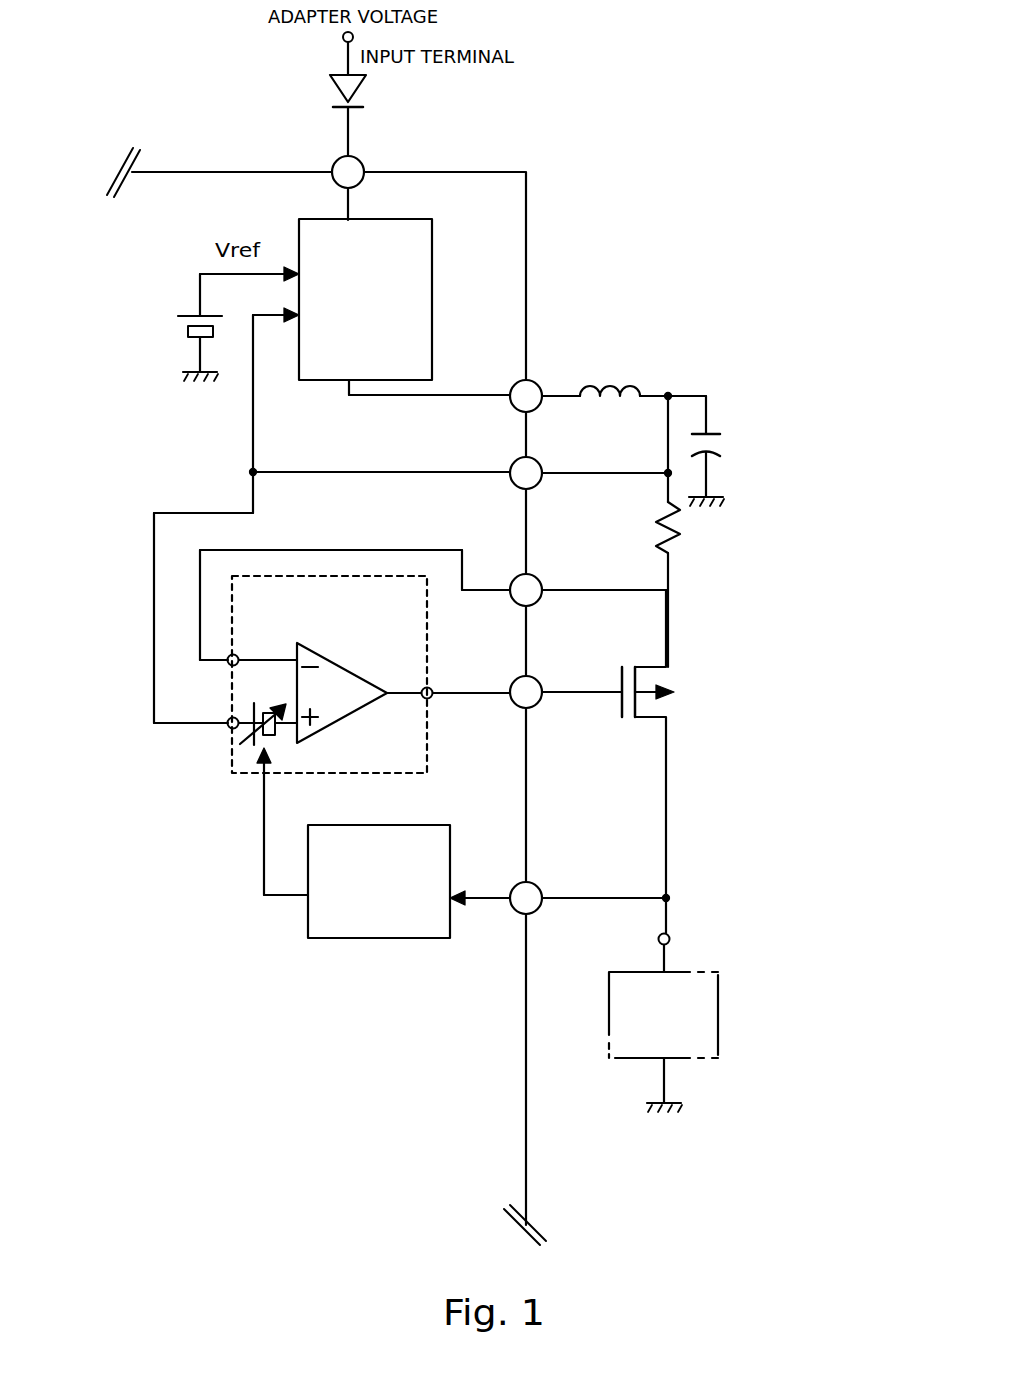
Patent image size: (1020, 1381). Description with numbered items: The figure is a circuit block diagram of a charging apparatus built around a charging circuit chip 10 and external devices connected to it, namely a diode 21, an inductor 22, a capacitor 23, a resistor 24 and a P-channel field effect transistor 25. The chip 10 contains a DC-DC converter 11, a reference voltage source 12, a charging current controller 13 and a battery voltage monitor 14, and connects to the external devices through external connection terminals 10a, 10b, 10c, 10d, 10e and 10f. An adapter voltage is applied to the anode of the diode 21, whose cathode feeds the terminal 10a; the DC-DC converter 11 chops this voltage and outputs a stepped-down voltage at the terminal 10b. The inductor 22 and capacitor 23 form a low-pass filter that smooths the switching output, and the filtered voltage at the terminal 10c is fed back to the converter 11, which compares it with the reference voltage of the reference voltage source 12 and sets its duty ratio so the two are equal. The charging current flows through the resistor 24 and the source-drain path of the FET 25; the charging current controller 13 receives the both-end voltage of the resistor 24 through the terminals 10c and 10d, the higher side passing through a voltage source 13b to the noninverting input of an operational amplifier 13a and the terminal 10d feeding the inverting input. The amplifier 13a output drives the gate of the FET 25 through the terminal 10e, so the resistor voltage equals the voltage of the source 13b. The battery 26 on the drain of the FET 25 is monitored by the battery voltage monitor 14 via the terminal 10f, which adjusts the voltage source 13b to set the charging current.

The charging circuit chip 10 is at (528, 199).
The external connection terminal 10a is at (361, 161).
The external connection terminal 10b is at (539, 384).
The external connection terminal 10c is at (543, 466).
The external connection terminal 10d is at (543, 582).
The external connection terminal 10e is at (543, 683).
The external connection terminal 10f is at (543, 888).
The DC-DC converter 11 is at (432, 253).
The reference voltage source 12 is at (178, 330).
The charging current controller 13 is at (358, 710).
The operational amplifier 13a is at (330, 727).
The voltage source 13b is at (255, 748).
The battery voltage monitor 14 is at (420, 940).
The diode 21 is at (364, 94).
The inductor 22 is at (630, 383).
The capacitor 23 is at (720, 446).
The resistor 24 is at (683, 541).
The P-channel field effect transistor 25 is at (660, 708).
The battery 26 is at (718, 992).